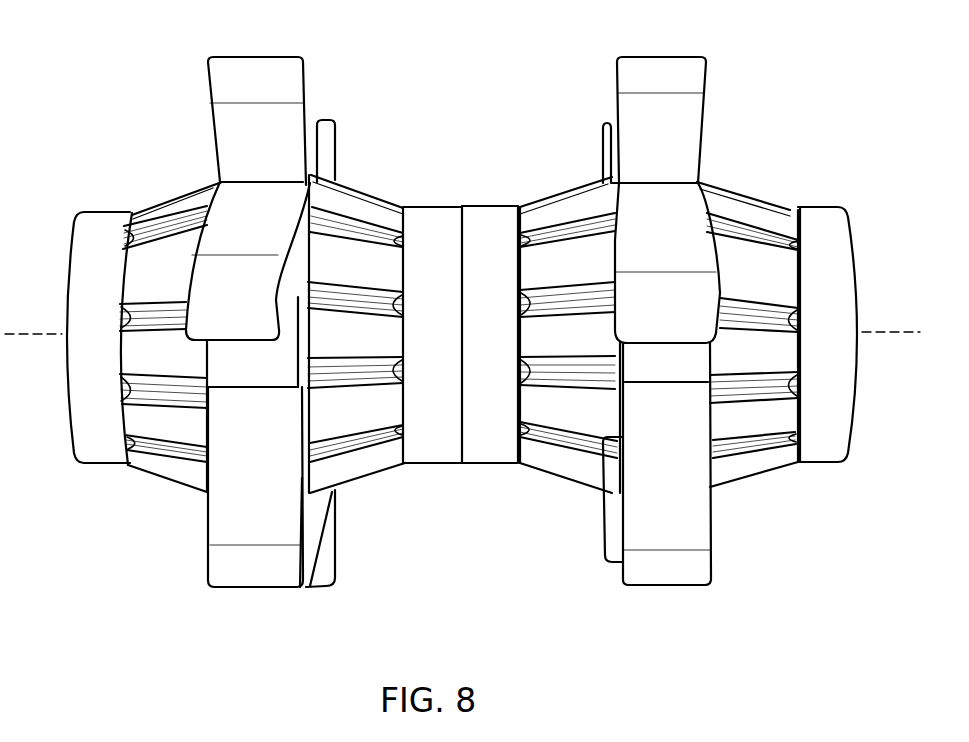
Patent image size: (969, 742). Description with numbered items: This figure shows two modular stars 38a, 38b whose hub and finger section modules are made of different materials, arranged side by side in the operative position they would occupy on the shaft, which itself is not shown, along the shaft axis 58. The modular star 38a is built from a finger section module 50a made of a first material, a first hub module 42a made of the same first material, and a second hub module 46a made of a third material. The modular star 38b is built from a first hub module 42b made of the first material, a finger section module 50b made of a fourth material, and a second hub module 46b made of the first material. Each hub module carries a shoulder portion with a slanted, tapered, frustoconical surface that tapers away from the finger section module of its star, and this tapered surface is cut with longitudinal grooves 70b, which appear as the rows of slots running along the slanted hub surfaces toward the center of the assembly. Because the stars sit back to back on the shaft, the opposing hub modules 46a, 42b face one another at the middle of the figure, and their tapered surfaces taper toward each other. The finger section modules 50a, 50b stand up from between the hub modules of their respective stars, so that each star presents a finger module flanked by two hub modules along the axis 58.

The modular star 38a is at (145, 84).
The modular star 38b is at (570, 78).
The first hub module 42a is at (155, 203).
The first hub module 42b is at (557, 190).
The second hub module 46a is at (370, 196).
The second hub module 46b is at (767, 195).
The finger section module 50a is at (302, 77).
The finger section module 50b is at (706, 72).
The longitudinal grooves 70b is at (551, 305).
The axis 58 is at (35, 338).